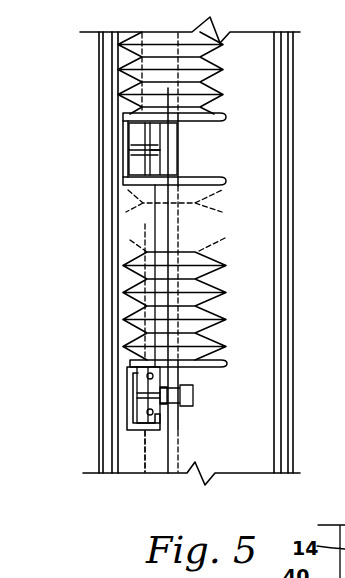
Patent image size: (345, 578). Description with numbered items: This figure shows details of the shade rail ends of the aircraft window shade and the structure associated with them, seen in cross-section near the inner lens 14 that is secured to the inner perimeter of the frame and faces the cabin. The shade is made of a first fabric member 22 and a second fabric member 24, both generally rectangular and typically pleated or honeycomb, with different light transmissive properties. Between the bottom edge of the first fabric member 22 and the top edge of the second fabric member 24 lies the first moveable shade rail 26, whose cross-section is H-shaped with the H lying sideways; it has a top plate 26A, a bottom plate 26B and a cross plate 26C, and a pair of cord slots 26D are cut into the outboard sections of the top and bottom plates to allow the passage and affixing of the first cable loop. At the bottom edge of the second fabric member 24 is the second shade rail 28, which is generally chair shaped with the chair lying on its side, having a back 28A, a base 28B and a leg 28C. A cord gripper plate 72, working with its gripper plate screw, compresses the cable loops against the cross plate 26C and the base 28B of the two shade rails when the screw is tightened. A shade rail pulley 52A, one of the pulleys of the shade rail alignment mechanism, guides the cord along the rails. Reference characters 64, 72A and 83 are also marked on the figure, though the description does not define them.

The inner lens 14 is at (102, 242).
The first fabric member 22 is at (227, 72).
The second fabric member 24 is at (228, 267).
The first moveable shade rail 26 is at (233, 145).
The top plate 26A is at (222, 113).
The bottom plate 26B is at (222, 186).
The cross plate 26C is at (178, 130).
The cord slots 26D is at (128, 133).
The second shade rail 28 is at (151, 372).
The back 28A is at (150, 358).
The base 28B is at (183, 415).
The leg 28C is at (140, 447).
The shade rail pulley 52A is at (155, 157).
The rod 64 is at (180, 155).
The cord gripper plate 72 is at (140, 382).
The clamp block flange 72A is at (157, 150).
The fastener 83 is at (140, 397).